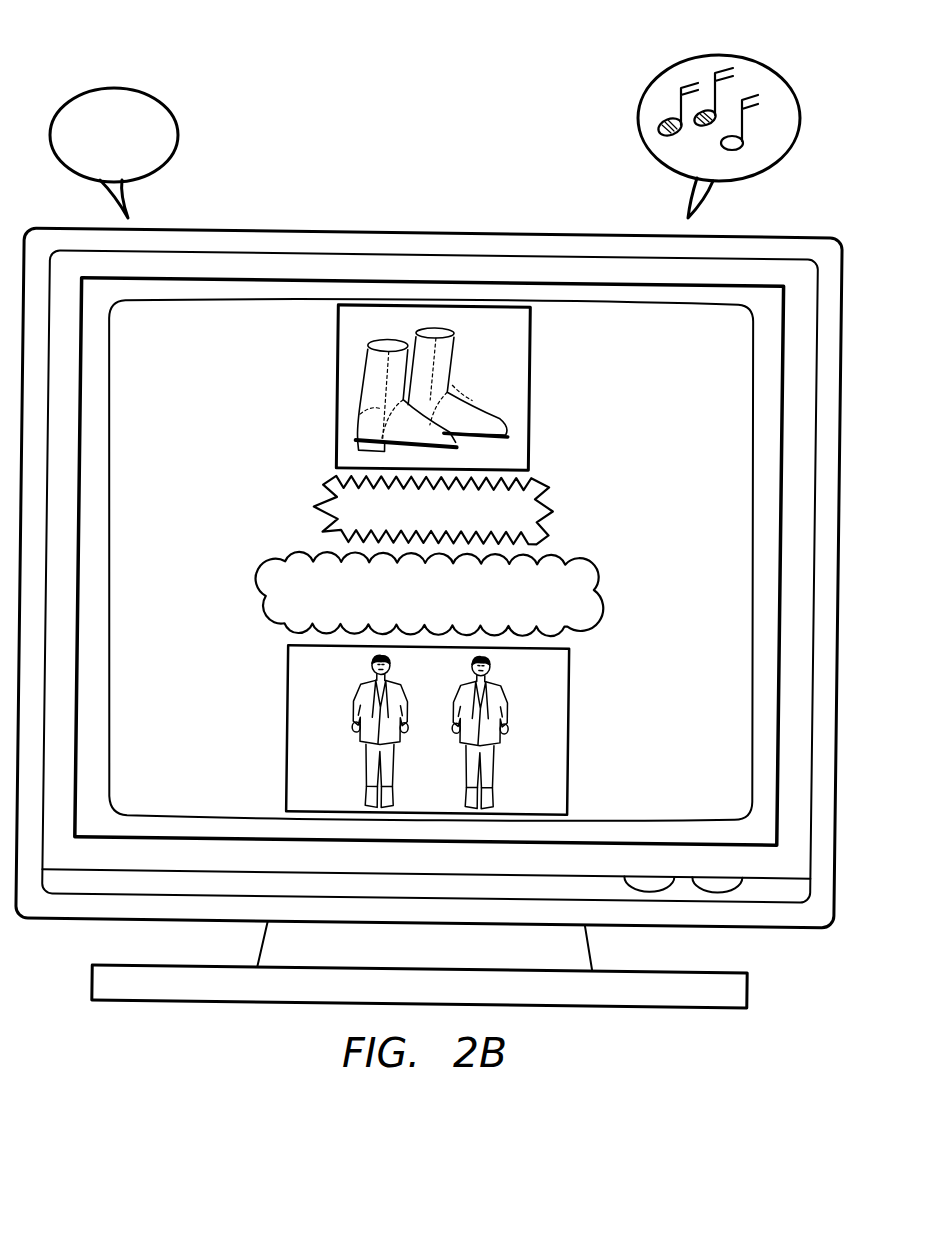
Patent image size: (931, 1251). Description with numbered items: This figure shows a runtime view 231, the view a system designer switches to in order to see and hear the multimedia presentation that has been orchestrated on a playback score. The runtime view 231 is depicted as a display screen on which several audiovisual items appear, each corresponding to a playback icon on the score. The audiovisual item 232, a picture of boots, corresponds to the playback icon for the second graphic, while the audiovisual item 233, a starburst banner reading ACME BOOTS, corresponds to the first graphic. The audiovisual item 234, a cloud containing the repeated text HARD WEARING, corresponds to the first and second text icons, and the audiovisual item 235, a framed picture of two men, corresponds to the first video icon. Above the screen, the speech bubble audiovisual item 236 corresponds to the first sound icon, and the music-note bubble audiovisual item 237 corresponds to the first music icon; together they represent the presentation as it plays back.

The runtime view 231 is at (390, 231).
The audiovisual item (Graphic 2) 232 is at (336, 380).
The audiovisual item (Graphic 1) 233 is at (552, 524).
The audiovisual item (Text 1/Text 2) 234 is at (265, 585).
The audiovisual item (Video 1) 235 is at (567, 735).
The audiovisual item (Sound 1) 236 is at (107, 85).
The audiovisual item (Music 1) 237 is at (735, 54).